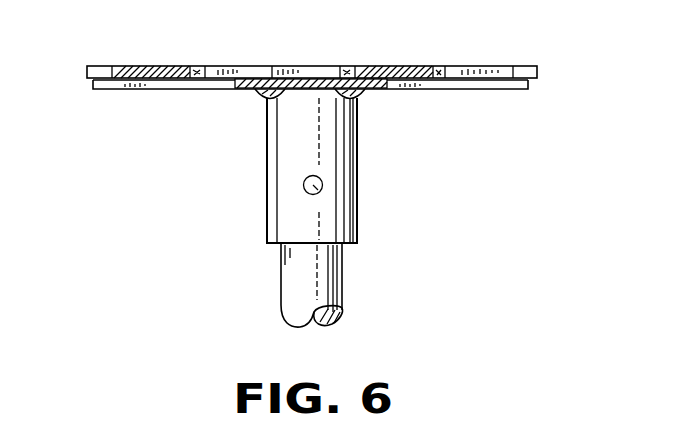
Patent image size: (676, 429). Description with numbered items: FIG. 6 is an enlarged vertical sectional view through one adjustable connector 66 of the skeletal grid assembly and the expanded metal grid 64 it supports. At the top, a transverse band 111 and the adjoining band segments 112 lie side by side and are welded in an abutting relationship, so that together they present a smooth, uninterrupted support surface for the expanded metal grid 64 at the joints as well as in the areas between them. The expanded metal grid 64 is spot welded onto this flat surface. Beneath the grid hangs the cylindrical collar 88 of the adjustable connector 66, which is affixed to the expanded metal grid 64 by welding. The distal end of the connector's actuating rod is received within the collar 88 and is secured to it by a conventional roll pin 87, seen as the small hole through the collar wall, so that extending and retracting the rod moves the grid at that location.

The expanded metal grid 64 is at (500, 65).
The adjustable connector 66 is at (298, 212).
The roll pin 87 is at (303, 188).
The cylindrical collar 88 is at (357, 193).
The transverse band 111 is at (307, 67).
The band segment 112 is at (173, 89).